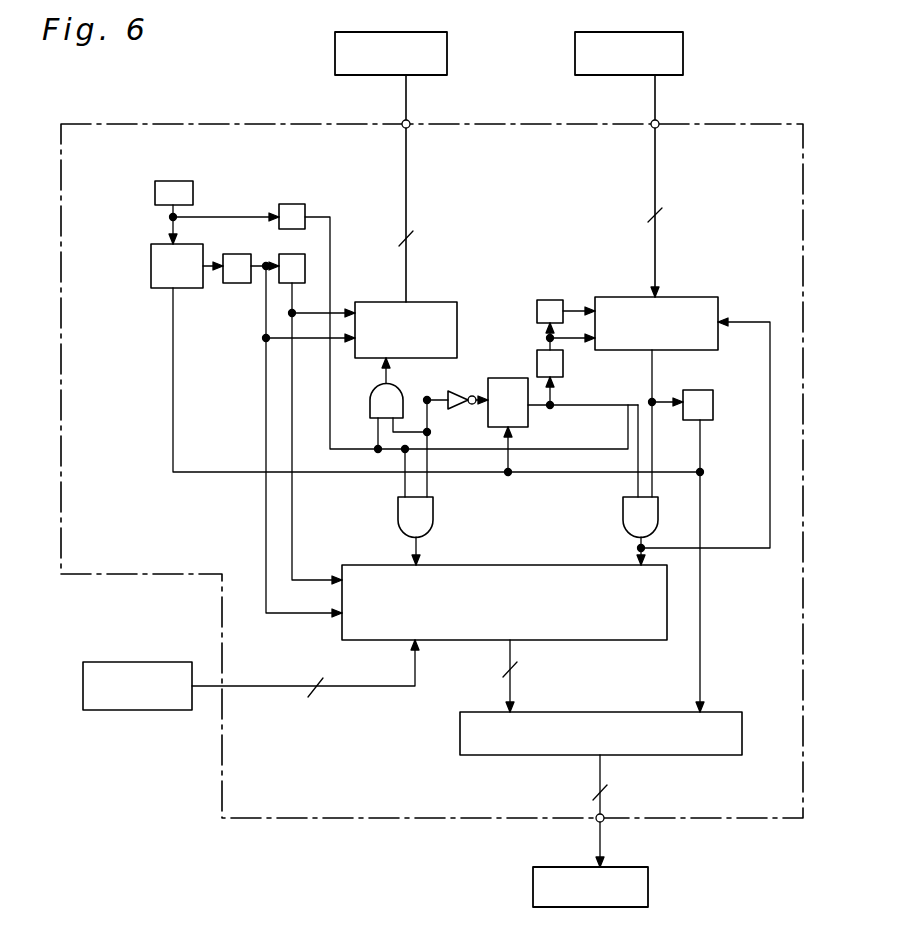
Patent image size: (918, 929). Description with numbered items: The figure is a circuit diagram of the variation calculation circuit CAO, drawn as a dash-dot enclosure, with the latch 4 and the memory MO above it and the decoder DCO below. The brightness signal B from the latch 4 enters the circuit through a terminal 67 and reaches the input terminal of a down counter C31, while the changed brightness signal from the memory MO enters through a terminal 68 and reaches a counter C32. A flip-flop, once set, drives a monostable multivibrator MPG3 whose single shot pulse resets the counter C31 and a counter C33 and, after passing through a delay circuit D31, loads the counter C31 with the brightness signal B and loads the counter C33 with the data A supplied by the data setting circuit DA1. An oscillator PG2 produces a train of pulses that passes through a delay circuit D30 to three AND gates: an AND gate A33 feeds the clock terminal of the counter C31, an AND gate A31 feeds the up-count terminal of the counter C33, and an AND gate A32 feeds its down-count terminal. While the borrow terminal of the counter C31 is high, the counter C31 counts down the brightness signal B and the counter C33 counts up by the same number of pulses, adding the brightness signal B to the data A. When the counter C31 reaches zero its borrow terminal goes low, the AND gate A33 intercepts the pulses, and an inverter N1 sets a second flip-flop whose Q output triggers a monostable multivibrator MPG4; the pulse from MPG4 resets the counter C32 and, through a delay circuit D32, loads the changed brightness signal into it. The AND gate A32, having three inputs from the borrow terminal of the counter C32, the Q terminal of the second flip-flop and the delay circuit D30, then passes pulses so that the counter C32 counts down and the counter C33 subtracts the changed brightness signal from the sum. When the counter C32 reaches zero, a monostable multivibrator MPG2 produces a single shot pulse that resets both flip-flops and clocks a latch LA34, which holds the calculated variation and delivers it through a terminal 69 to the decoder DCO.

The latch 4 is at (447, 52).
The memory MO is at (683, 53).
The terminal 67 is at (402, 122).
The terminal 68 is at (651, 123).
The terminal 69 is at (596, 815).
The oscillator PG2 is at (176, 181).
The monostable multivibrator MPG3 is at (237, 283).
The monostable multivibrator MPG4 is at (563, 360).
The monostable multivibrator MPG2 is at (700, 390).
The delay circuit D30 is at (299, 204).
The delay circuit D31 is at (307, 266).
The delay circuit D32 is at (556, 300).
The down counter C31 is at (436, 302).
The counter C32 is at (700, 297).
The counter C33 is at (522, 582).
The inverter N1 is at (460, 410).
The AND gate A31 is at (433, 515).
The AND gate A32 is at (623, 515).
The AND gate A33 is at (370, 406).
The latch LA34 is at (608, 712).
The data setting circuit DA1 is at (251, 675).
The variation calculation circuit CAO is at (222, 737).
The decoder DCO is at (648, 888).